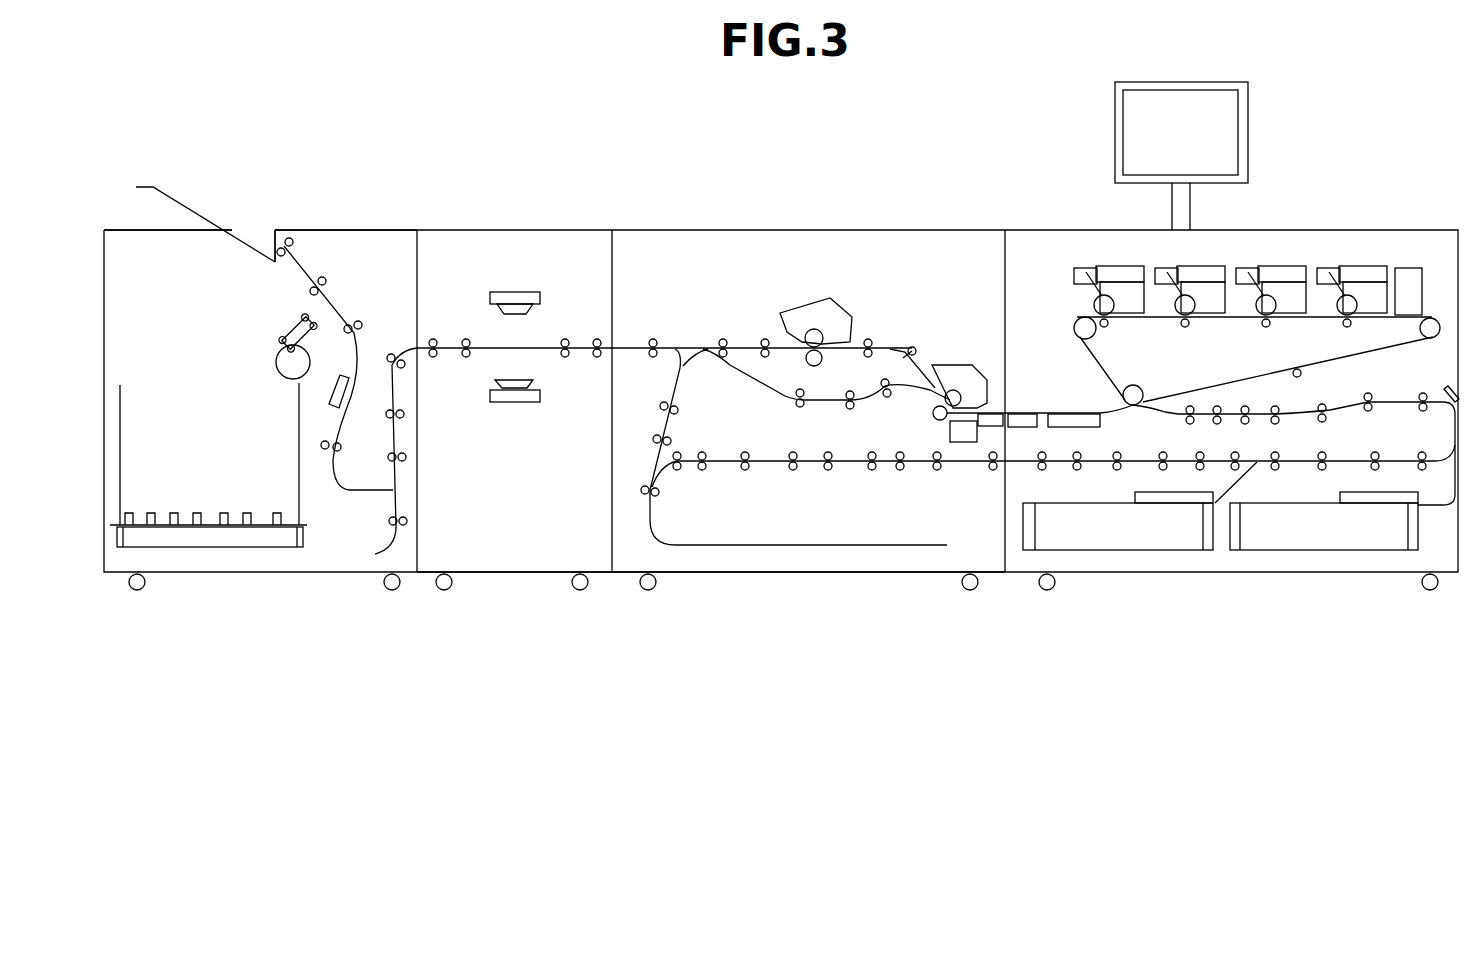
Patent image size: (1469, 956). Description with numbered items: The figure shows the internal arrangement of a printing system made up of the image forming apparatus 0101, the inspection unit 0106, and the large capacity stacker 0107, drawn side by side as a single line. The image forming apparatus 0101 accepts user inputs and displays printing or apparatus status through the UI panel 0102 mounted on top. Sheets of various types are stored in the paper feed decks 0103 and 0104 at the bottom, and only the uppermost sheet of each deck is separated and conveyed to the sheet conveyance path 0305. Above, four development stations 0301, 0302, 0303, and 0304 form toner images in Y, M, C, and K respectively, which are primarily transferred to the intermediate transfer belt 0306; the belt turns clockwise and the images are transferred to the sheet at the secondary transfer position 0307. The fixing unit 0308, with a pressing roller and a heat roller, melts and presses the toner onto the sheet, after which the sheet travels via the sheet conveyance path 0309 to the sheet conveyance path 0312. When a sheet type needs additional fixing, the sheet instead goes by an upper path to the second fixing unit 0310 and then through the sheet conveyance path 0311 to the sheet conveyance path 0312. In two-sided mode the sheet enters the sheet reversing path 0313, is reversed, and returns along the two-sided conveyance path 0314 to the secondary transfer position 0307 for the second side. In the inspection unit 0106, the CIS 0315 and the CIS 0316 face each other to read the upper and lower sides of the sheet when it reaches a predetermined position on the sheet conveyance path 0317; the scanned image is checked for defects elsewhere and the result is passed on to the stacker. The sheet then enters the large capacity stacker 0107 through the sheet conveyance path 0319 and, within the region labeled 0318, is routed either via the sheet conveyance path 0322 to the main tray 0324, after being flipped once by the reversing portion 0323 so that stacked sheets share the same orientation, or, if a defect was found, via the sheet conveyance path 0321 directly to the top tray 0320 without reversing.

The image forming apparatus 0101 is at (778, 574).
The UI panel 0102 is at (1178, 100).
The paper feed deck 0103 is at (1143, 552).
The paper feed deck 0104 is at (1325, 552).
The inspection unit 0106 is at (517, 574).
The large capacity stacker 0107 is at (333, 574).
The development station 0301 is at (1362, 263).
The development station 0302 is at (1282, 263).
The development station 0303 is at (1210, 263).
The development station 0304 is at (1125, 263).
The sheet conveyance path 0305 is at (1405, 400).
The intermediate transfer belt 0306 is at (1238, 387).
The secondary transfer position 0307 is at (1134, 384).
The fixing unit 0308 is at (953, 365).
The sheet conveyance path 0309 is at (767, 383).
The second fixing unit 0310 is at (805, 300).
The sheet conveyance path 0311 is at (745, 343).
The sheet conveyance path 0312 is at (617, 345).
The sheet reversing path 0313 is at (743, 541).
The two-sided conveyance path 0314 is at (963, 468).
The CIS 0315 is at (517, 290).
The CIS 0316 is at (513, 405).
The sheet conveyance path 0317 is at (487, 347).
The sheet feed conveyance unit 0318 is at (383, 230).
The sheet conveyance path 0319 is at (405, 464).
The top tray 0320 is at (200, 212).
The sheet conveyance path 0321 is at (305, 262).
The sheet conveyance path 0322 is at (316, 308).
The reversing portion 0323 is at (383, 551).
The main tray 0324 is at (208, 465).